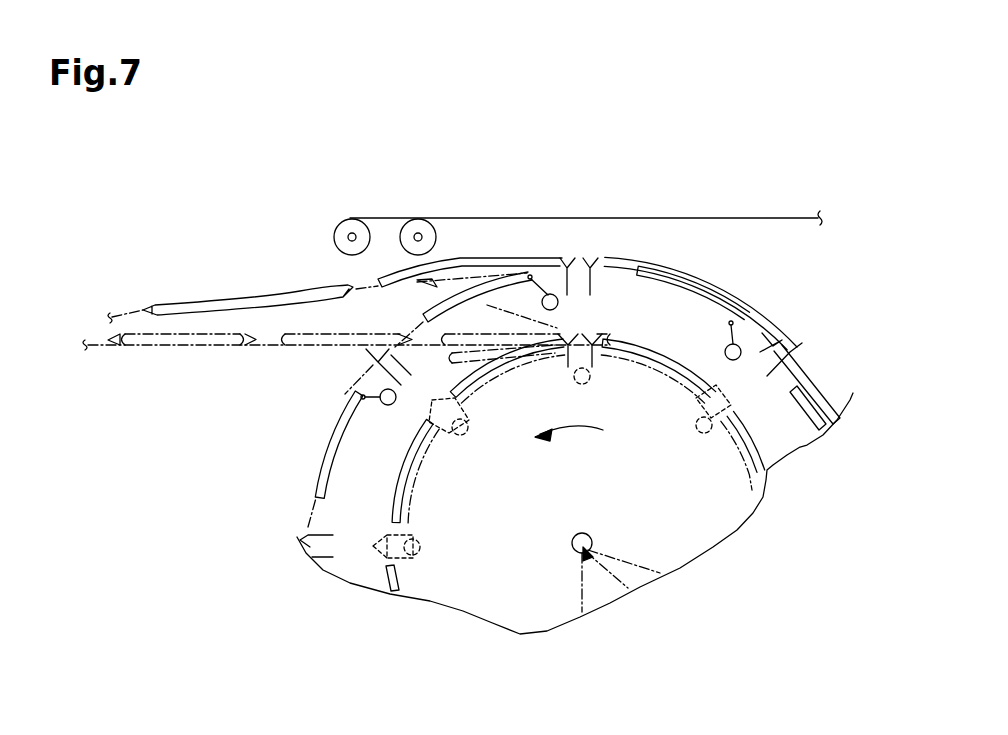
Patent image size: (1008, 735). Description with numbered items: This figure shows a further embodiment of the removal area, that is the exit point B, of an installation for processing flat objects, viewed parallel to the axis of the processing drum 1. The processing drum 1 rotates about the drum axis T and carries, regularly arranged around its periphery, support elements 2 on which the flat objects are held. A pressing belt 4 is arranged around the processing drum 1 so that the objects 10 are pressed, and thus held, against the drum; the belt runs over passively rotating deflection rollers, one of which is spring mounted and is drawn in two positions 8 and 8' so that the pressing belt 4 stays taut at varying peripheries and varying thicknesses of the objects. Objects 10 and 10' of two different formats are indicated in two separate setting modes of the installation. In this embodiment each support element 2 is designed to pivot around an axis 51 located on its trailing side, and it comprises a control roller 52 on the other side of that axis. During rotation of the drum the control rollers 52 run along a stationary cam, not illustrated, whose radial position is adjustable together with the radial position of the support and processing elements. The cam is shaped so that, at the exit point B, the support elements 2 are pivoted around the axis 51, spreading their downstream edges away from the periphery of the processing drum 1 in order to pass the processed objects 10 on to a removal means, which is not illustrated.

The processing drum 1 is at (248, 492).
The support element 2 is at (325, 440).
The pressing belt 4 is at (578, 218).
The deflection roller 8 is at (396, 202).
The deflection roller position 8' is at (321, 205).
The flat object 10 is at (490, 327).
The flat object 10' is at (569, 462).
The axis 51 is at (735, 344).
The control roller 52 is at (760, 340).
The exit point B is at (436, 295).
The drum axis T is at (571, 541).